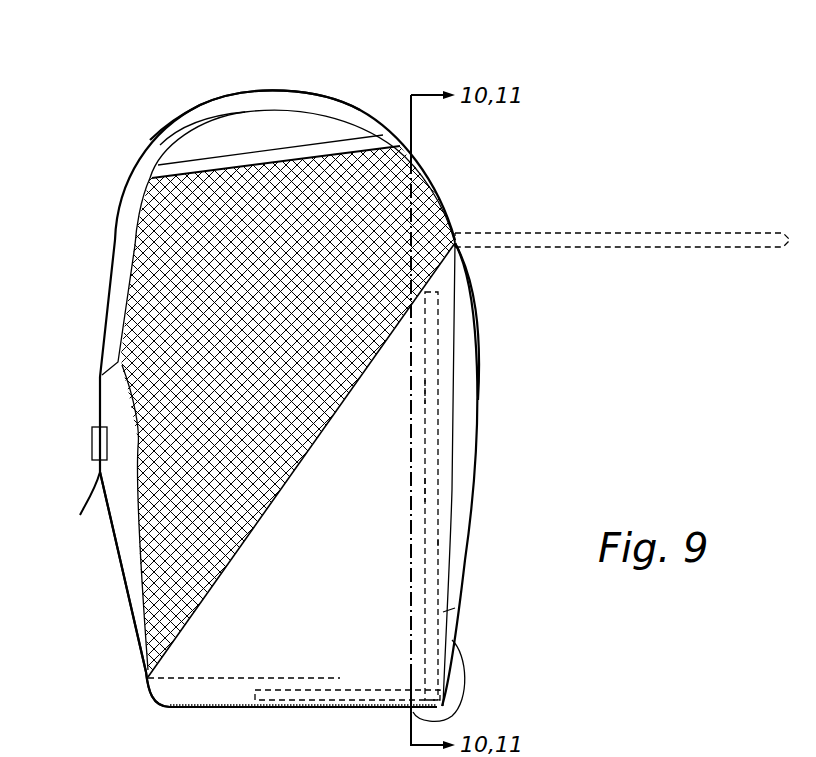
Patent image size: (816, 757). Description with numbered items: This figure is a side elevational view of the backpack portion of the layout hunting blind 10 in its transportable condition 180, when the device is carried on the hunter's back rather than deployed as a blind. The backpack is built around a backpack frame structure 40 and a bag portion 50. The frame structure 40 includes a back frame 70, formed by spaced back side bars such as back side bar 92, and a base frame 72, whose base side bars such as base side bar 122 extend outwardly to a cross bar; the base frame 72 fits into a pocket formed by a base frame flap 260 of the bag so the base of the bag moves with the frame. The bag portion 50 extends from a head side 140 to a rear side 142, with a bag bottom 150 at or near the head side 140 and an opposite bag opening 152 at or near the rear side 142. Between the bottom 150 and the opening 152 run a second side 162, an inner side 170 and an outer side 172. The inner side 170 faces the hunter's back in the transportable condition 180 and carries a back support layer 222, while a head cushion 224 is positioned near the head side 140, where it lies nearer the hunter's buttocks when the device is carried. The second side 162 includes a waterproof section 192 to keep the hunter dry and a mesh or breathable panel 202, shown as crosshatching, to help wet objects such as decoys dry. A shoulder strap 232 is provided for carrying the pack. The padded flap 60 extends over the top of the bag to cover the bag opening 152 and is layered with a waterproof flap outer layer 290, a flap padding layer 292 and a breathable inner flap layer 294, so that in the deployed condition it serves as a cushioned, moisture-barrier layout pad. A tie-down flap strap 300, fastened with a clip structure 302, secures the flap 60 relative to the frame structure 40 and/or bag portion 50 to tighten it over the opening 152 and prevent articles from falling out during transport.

The layout hunting blind 10 is at (102, 98).
The backpack frame structure 40 is at (437, 392).
The bag portion 50 is at (115, 607).
The padded flap 60 is at (125, 173).
The back frame 70 is at (437, 490).
The base frame 72 is at (268, 707).
The back side bar 92 is at (440, 545).
The base side bar 122 is at (305, 688).
The head side 140 is at (168, 707).
The rear side 142 is at (313, 145).
The bag bottom 150 is at (300, 707).
The bag opening 152 is at (257, 152).
The second side 162 is at (387, 367).
The inner side 170 is at (447, 562).
The outer side 172 is at (135, 530).
The transportable condition 180 is at (218, 80).
The waterproof section 192 is at (362, 445).
The mesh or breathable panel 202 is at (195, 265).
The back support layer 222 is at (443, 612).
The head cushion 224 is at (455, 675).
The shoulder strap 232 is at (476, 440).
The base frame flap 260 is at (222, 677).
The flap outer layer 290 is at (193, 102).
The flap padding layer 292 is at (237, 103).
The inner flap layer 294 is at (205, 138).
The tie-down flap strap 300 is at (100, 405).
The clip structure 302 is at (97, 447).